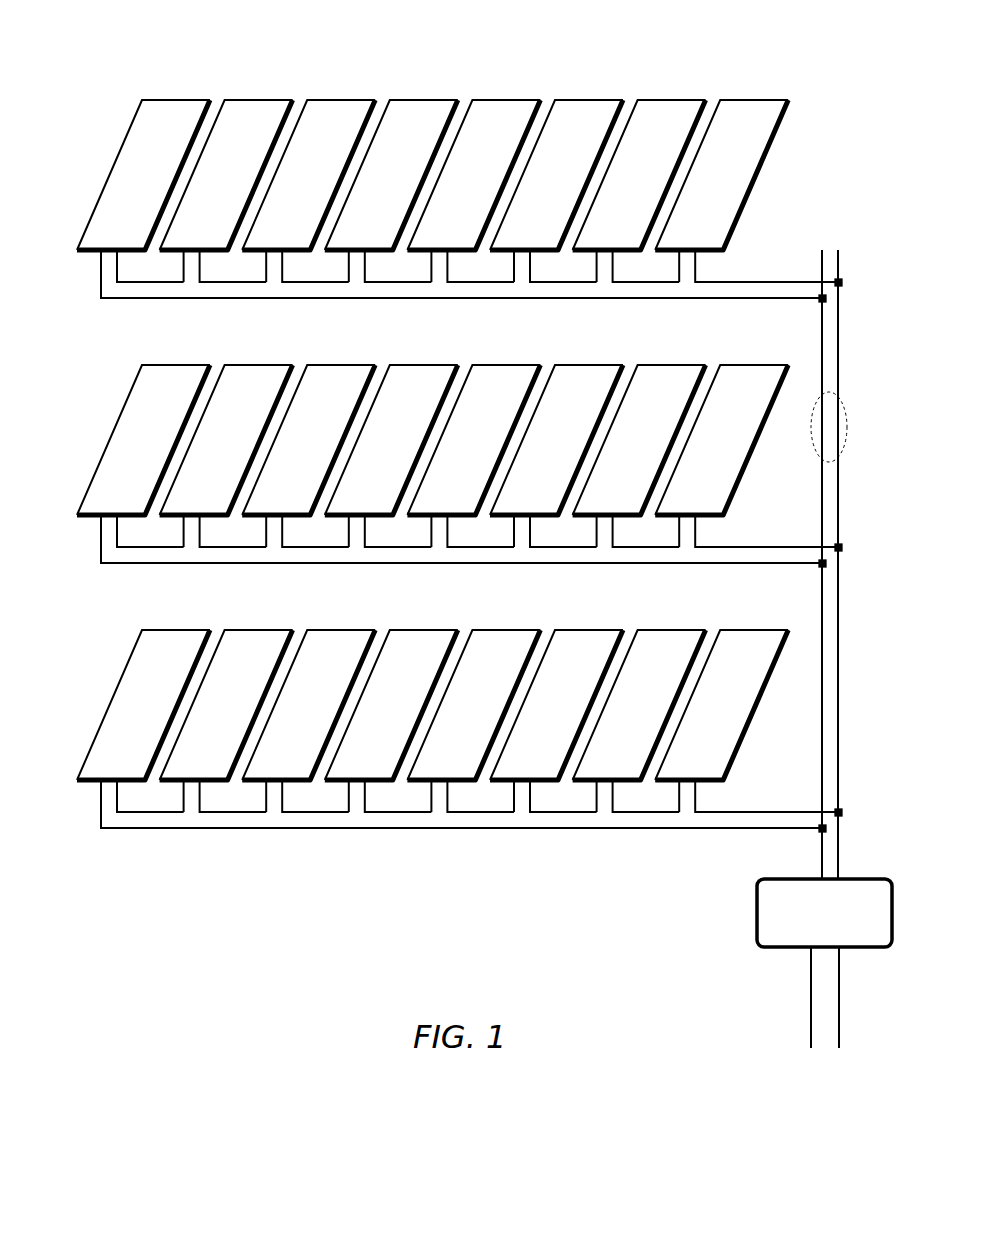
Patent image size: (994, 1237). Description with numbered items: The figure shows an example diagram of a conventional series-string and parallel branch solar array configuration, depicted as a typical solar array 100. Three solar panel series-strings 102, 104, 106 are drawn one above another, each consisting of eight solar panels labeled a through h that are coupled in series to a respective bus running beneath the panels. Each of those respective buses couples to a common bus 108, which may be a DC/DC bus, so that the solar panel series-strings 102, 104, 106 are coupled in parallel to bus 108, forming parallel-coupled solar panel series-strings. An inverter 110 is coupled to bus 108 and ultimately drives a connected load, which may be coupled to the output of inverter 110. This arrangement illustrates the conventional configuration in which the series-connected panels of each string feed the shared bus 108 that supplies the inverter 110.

The solar array 100 is at (204, 58).
The solar panel series-string 102 is at (103, 147).
The solar panel series-string 104 is at (103, 412).
The solar panel series-string 106 is at (103, 677).
The bus 108 is at (845, 423).
The inverter 110 is at (824, 963).